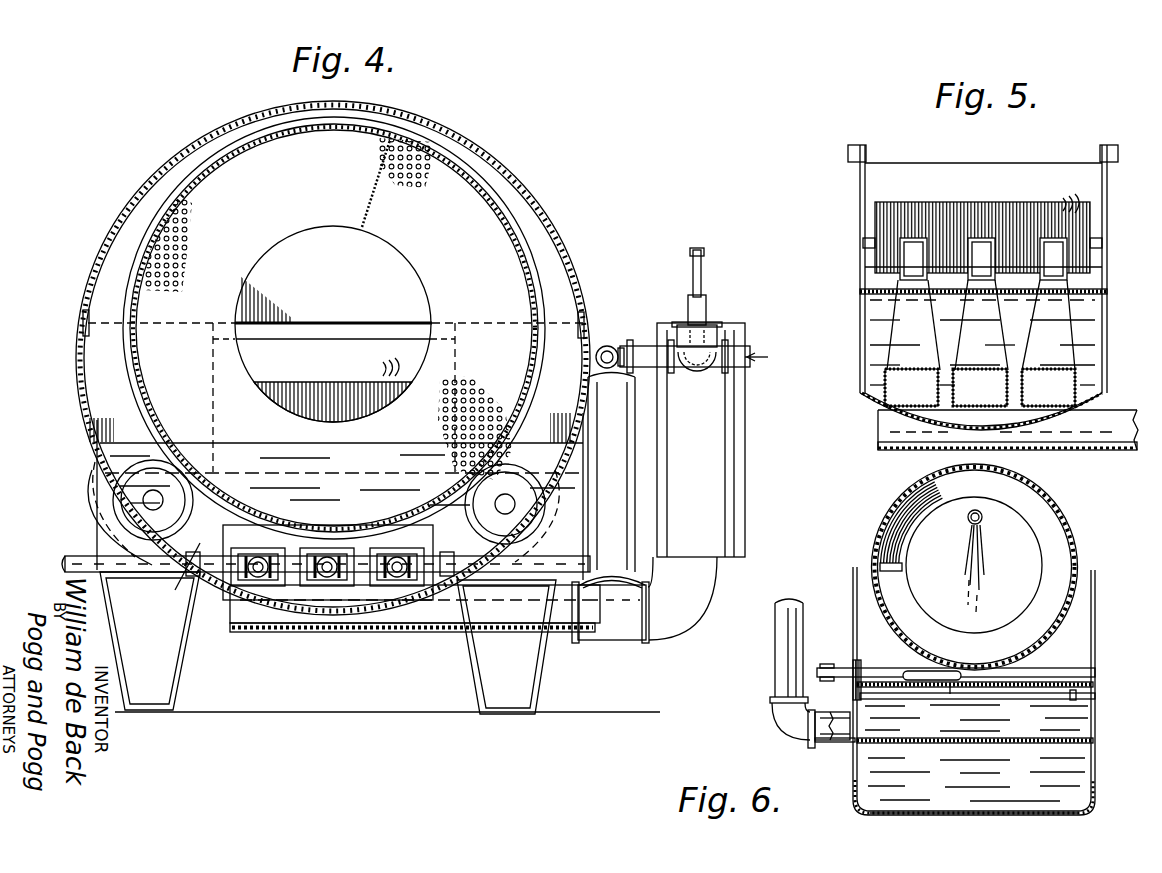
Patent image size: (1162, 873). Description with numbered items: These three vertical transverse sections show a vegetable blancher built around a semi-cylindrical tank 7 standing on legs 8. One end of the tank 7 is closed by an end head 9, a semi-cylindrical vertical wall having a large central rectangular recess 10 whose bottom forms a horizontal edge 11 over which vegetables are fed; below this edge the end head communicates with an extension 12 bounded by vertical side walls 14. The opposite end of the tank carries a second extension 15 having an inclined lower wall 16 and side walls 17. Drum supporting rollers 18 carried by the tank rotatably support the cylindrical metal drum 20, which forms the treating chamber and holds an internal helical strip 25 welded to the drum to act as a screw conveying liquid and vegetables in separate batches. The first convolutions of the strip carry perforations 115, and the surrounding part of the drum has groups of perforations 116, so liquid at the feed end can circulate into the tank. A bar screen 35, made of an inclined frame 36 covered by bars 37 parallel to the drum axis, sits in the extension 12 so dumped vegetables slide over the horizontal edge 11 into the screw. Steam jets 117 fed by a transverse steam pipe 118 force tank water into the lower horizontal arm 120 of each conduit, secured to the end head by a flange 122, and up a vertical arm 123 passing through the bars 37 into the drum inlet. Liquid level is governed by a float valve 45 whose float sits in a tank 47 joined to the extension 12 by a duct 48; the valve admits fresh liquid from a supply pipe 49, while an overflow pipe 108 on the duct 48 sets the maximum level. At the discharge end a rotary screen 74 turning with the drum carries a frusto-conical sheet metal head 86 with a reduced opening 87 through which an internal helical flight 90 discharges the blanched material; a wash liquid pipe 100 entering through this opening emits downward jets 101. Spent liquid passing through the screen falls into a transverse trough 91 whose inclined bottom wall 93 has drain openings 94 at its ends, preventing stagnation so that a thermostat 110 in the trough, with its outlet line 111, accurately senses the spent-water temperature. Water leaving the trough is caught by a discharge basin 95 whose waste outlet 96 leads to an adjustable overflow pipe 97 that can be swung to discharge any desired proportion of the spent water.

In FIG. 4, the tank 7 is at (284, 607).
In FIG. 4, the legs 8 is at (183, 667).
In FIG. 4, the end head 9 is at (178, 575).
In FIG. 4, the central rectangular recess 10 is at (215, 396).
In FIG. 4, the horizontal edge 11 is at (351, 442).
In FIG. 5, the horizontal edge 11 is at (1105, 293).
In FIG. 5, the extension 12 is at (1106, 230).
In FIG. 5, the side walls 14 is at (858, 304).
In FIG. 6, the extension 15 is at (1108, 632).
In FIG. 6, the inclined lower wall 16 is at (1066, 814).
In FIG. 6, the side walls 17 is at (1093, 733).
In FIG. 4, the drum supporting rollers 18 is at (140, 470).
In FIG. 4, the drum 20 is at (240, 137).
In FIG. 4, the helical strip 25 is at (304, 228).
In FIG. 4, the bar screen 35 is at (307, 374).
In FIG. 5, the bar screen 35 is at (930, 196).
In FIG. 4, the inclined frame 36 is at (349, 350).
In FIG. 5, the inclined frame 36 is at (1054, 156).
In FIG. 4, the bars 37 is at (381, 365).
In FIG. 5, the bars 37 is at (1062, 196).
In FIG. 4, the float valve 45 is at (712, 380).
In FIG. 4, the tank 47 is at (740, 440).
In FIG. 4, the duct 48 is at (357, 632).
In FIG. 5, the duct 48 is at (1039, 448).
In FIG. 4, the supply pipe 49 is at (768, 356).
In FIG. 6, the screen 74 is at (896, 496).
In FIG. 6, the sheet metal head 86 is at (1044, 524).
In FIG. 6, the opening 87 is at (1040, 537).
In FIG. 6, the internal helical flight 90 is at (903, 570).
In FIG. 6, the transverse trough 91 is at (1023, 656).
In FIG. 6, the inclined bottom wall 93 is at (957, 694).
In FIG. 6, the drain openings 94 is at (878, 655).
In FIG. 6, the discharge basin 95 is at (1092, 744).
In FIG. 6, the waste outlet 96 is at (842, 742).
In FIG. 6, the adjustable overflow pipe 97 is at (774, 673).
In FIG. 6, the wash liquid pipe 100 is at (983, 521).
In FIG. 6, the jets 101 is at (985, 553).
In FIG. 4, the overflow pipe 108 is at (622, 404).
In FIG. 6, the thermostat 110 is at (950, 656).
In FIG. 6, the outlet line 111 is at (818, 670).
In FIG. 4, the perforations 115 is at (177, 232).
In FIG. 4, the perforations 116 is at (351, 128).
In FIG. 4, the steam jets 117 is at (277, 541).
In FIG. 4, the steam pipe 118 is at (76, 557).
In FIG. 4, the lower horizontal arm 120 is at (190, 554).
In FIG. 5, the lower horizontal arm 120 is at (995, 360).
In FIG. 4, the flange 122 is at (337, 540).
In FIG. 5, the vertical arm 123 is at (934, 336).